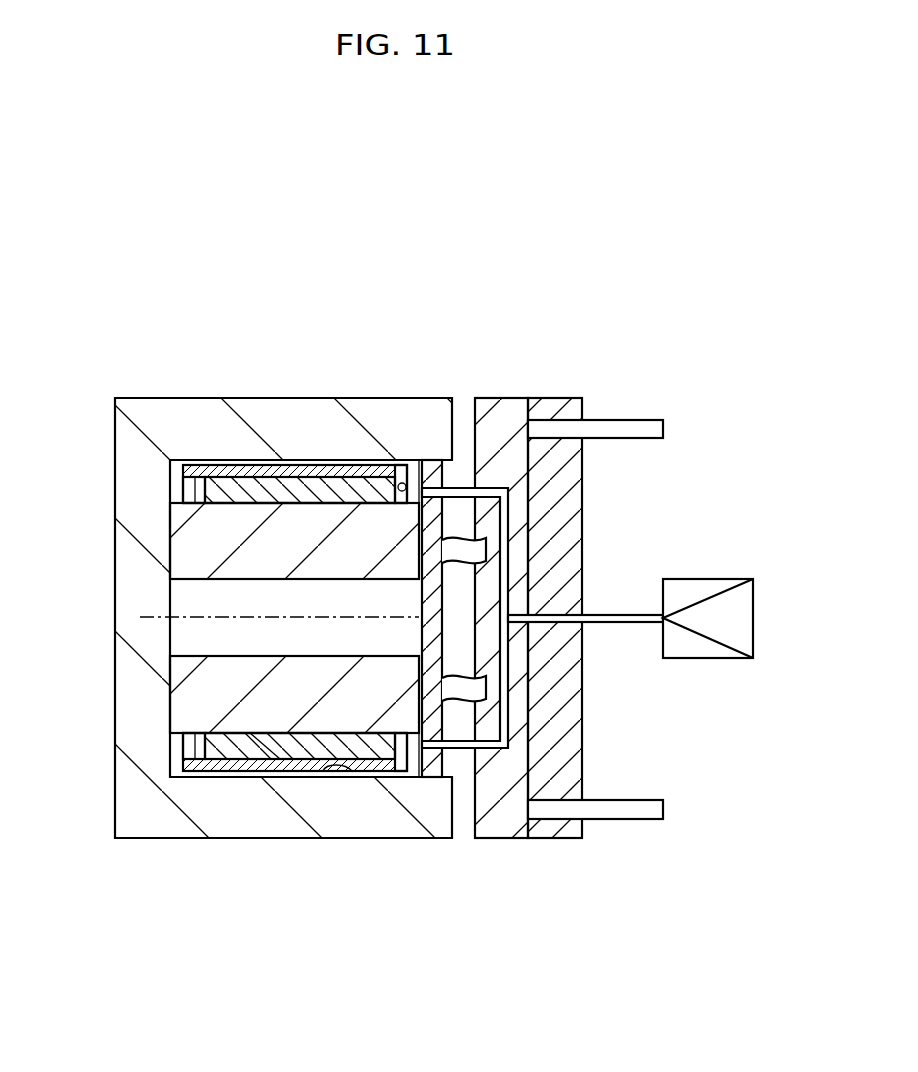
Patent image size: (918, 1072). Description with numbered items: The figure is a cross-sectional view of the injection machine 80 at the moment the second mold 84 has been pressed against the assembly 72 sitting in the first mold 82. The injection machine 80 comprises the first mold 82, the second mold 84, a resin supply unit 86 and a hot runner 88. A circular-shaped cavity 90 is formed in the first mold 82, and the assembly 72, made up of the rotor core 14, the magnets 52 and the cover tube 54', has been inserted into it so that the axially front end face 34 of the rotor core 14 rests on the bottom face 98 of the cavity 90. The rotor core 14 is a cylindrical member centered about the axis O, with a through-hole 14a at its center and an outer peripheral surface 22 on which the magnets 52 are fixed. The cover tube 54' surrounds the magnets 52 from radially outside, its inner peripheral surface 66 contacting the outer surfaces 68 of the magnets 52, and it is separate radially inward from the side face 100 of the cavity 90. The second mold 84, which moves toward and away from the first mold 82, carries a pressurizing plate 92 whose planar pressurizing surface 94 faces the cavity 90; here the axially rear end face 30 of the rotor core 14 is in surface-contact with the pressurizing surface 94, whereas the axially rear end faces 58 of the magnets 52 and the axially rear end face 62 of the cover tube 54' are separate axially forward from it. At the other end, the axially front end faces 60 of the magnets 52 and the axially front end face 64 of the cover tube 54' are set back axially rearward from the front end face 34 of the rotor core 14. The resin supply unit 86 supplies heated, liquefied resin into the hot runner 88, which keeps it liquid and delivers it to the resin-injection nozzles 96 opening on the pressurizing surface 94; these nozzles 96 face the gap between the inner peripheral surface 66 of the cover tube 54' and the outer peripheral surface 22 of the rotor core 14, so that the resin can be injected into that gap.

The injection machine 80 is at (485, 222).
The first mold 82 is at (145, 372).
The second mold 84 is at (555, 355).
The resin supply unit 86 is at (753, 620).
The hot runner 88 is at (510, 537).
The pressurizing plate 92 is at (434, 653).
The rotor core 14 is at (187, 553).
The through-hole 14a is at (270, 582).
The outer peripheral surface 22 is at (210, 492).
The axially rear end face 30 is at (420, 567).
The axially front end face 34 is at (170, 703).
The magnets 52 is at (258, 492).
The cover tube 54' is at (289, 407).
The axially rear end faces 58 is at (402, 470).
The axially front end faces 60 is at (185, 486).
The axially rear end face 62 is at (405, 484).
The axially front end face 64 is at (185, 470).
The inner peripheral surface 66 is at (210, 755).
The outer surfaces 68 is at (265, 748).
The assembly 72 is at (340, 432).
The cavity 90 is at (317, 773).
The pressurizing surface 94 is at (421, 632).
The resin-injection nozzles 96 is at (413, 488).
The bottom face 98 is at (172, 609).
The side face 100 is at (323, 774).
The axis O is at (146, 618).